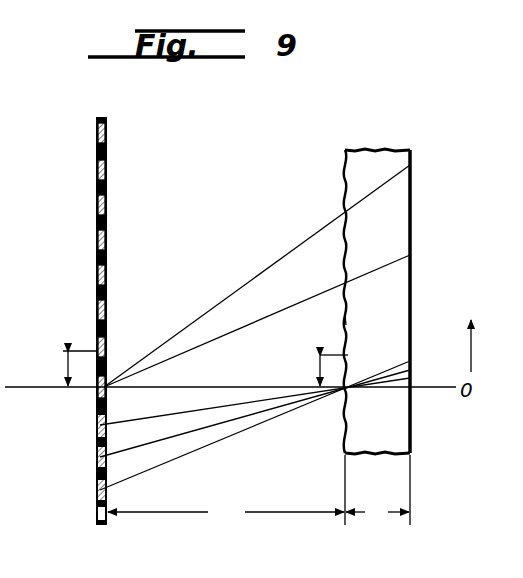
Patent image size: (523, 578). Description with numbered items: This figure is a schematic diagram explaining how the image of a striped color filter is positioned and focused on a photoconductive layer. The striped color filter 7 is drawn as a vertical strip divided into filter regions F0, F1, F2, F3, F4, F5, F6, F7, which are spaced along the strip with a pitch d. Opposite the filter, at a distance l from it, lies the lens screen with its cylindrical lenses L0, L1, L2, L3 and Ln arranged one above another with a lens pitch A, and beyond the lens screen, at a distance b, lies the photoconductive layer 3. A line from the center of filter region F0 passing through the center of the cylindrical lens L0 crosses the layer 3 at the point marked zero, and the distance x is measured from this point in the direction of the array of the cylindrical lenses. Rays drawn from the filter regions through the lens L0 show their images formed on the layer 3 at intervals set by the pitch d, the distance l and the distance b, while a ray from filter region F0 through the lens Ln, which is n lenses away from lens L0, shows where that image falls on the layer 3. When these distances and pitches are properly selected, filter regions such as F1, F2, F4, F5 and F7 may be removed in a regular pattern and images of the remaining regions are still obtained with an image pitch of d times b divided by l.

The photoconductive layer 3 is at (400, 432).
The color filter 7 is at (92, 479).
The filter region F0 is at (96, 392).
The filter region F1 is at (96, 346).
The filter region F2 is at (96, 310).
The filter region F3 is at (96, 279).
The filter region F4 is at (96, 243).
The filter region F5 is at (96, 206).
The filter region F6 is at (96, 171).
The filter region F7 is at (96, 134).
The cylindrical lens L0 is at (345, 410).
The cylindrical lens L1 is at (345, 352).
The cylindrical lens L2 is at (322, 322).
The cylindrical lens L3 is at (345, 285).
The cylindrical lens Ln is at (345, 213).
The pitch of the lenses A is at (318, 377).
The pitch of the filter regions d is at (65, 372).
The distance from the color filter to the lens screen l is at (226, 513).
The distance from the lens screen to the photoconductive layer b is at (377, 491).
The distance in the direction of array of the cylindrical lenses x is at (468, 332).